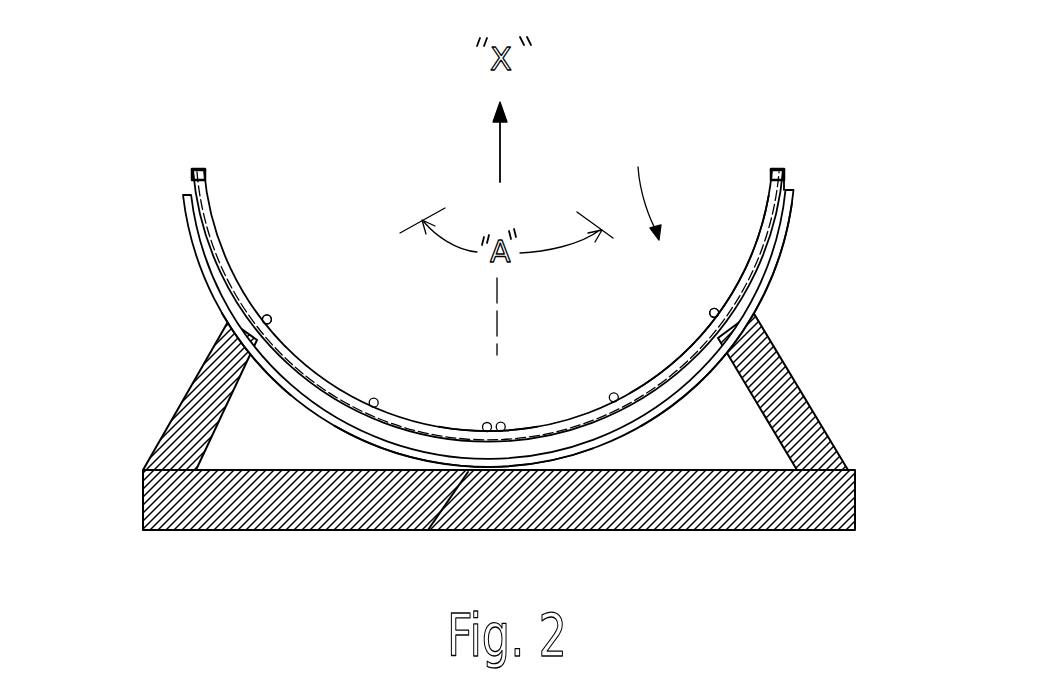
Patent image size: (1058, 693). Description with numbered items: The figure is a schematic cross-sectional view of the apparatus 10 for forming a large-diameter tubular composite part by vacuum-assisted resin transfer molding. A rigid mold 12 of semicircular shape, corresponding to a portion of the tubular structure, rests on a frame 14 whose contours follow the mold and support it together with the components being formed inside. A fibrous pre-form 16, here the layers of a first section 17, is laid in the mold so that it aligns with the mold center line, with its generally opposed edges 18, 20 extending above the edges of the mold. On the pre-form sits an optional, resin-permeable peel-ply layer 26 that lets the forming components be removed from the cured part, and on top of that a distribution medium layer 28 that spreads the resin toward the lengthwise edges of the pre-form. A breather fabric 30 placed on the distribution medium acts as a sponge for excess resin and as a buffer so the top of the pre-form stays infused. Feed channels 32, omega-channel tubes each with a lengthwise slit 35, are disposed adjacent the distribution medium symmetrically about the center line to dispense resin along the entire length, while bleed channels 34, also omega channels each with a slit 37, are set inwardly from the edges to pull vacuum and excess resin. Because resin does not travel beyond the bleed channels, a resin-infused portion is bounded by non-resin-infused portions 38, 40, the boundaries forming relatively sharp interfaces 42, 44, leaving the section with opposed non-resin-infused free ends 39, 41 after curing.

The apparatus 10 is at (652, 88).
The rigid mold 12 is at (521, 274).
The frame 14 is at (792, 390).
The fibrous pre-form 16 is at (792, 145).
The first section 17 is at (640, 186).
The edge 18 is at (788, 166).
The edge 20 is at (197, 170).
The peel-ply layer 26 is at (766, 212).
The distribution medium layer 28 is at (544, 430).
The breather fabric 30 is at (322, 364).
The feed channels 32 is at (500, 423).
The bleed channels 34 is at (283, 307).
The slit 35 is at (366, 416).
The slit 37 is at (723, 322).
The non-resin-infused portion 38 is at (205, 222).
The non-resin-infused free end 39 is at (208, 176).
The non-resin-infused portion 40 is at (768, 240).
The non-resin-infused free end 41 is at (777, 167).
The interface 42 is at (225, 320).
The interface 44 is at (768, 313).